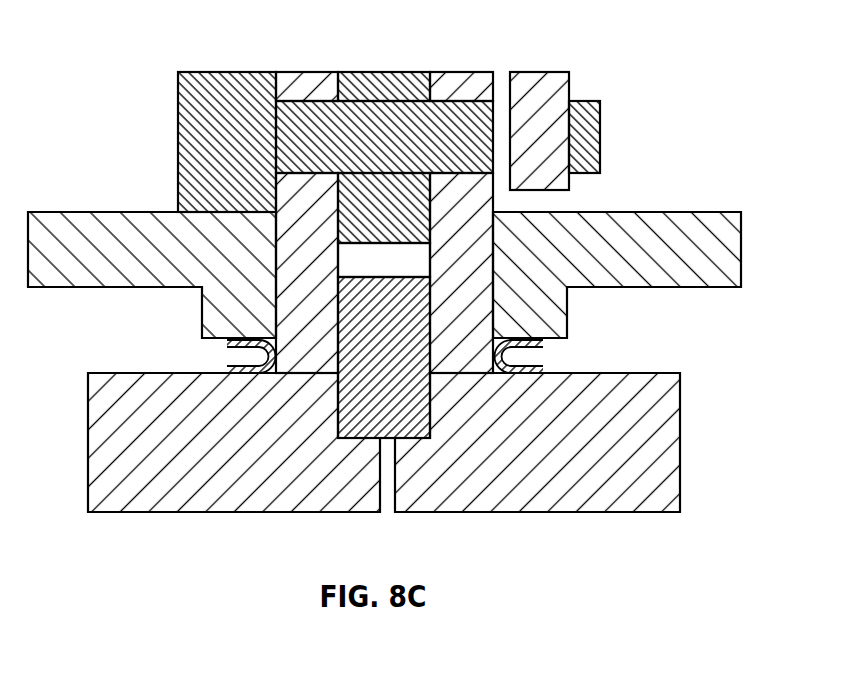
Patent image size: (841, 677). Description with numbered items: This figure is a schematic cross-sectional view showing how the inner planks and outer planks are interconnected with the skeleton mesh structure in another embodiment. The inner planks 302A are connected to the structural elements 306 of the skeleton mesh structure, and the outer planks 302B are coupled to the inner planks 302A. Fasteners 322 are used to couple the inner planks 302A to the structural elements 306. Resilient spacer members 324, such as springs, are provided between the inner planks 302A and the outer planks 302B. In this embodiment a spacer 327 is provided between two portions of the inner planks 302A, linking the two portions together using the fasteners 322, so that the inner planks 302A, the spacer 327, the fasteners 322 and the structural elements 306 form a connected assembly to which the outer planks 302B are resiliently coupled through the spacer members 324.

The inner planks 302A is at (232, 493).
The outer planks 302B is at (105, 211).
The structural elements 306 is at (392, 427).
The fasteners 322 is at (198, 90).
The spacers resilient members 324 is at (227, 372).
The spacer 327 is at (384, 91).